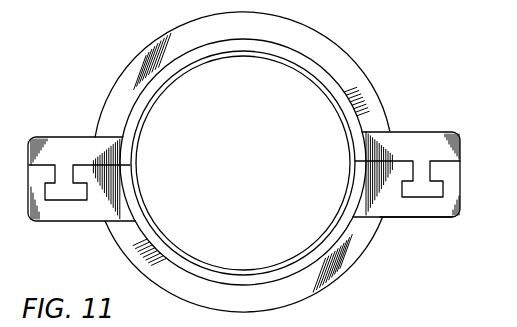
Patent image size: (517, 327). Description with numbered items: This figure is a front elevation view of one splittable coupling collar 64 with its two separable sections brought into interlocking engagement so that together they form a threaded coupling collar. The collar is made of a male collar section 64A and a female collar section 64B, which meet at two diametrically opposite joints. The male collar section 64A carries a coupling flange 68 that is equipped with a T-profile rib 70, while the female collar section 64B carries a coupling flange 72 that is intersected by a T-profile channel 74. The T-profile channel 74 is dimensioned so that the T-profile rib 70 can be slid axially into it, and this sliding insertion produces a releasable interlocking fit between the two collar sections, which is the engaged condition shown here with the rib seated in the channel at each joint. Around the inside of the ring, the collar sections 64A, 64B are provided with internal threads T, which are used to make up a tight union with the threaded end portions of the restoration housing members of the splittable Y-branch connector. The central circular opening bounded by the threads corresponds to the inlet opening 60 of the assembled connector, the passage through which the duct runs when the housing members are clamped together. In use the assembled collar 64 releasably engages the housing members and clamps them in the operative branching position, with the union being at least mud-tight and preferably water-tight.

The inlet opening 60 is at (256, 168).
The splittable coupling collar 64 is at (372, 51).
The male collar section 64A is at (123, 69).
The female collar section 64B is at (333, 289).
The coupling flange 68 is at (425, 135).
The T-profile rib 70 is at (437, 190).
The coupling flange 72 is at (408, 212).
The T-profile channel 74 is at (55, 202).
The internal threads T is at (290, 67).